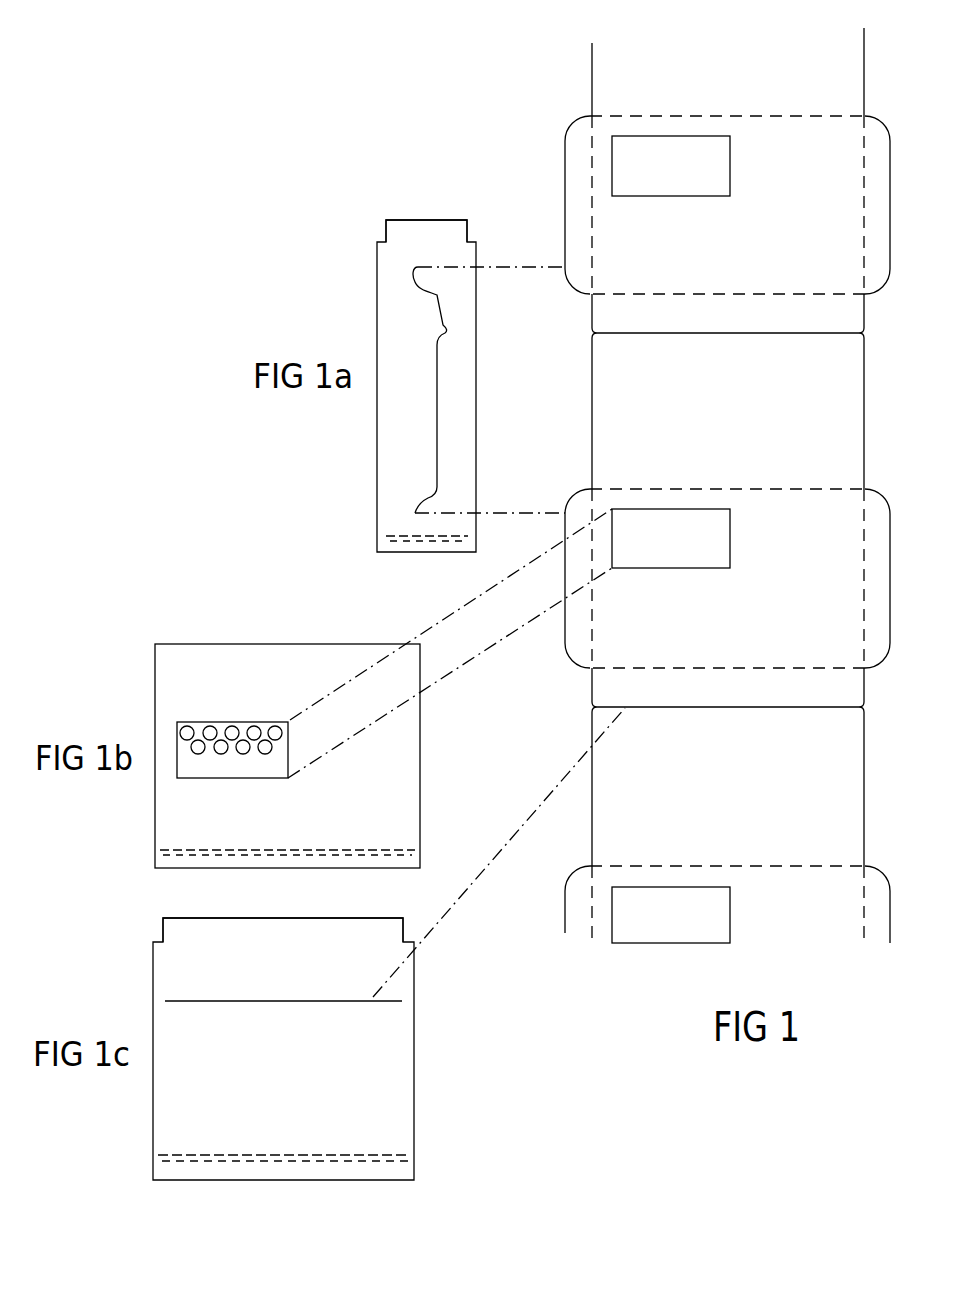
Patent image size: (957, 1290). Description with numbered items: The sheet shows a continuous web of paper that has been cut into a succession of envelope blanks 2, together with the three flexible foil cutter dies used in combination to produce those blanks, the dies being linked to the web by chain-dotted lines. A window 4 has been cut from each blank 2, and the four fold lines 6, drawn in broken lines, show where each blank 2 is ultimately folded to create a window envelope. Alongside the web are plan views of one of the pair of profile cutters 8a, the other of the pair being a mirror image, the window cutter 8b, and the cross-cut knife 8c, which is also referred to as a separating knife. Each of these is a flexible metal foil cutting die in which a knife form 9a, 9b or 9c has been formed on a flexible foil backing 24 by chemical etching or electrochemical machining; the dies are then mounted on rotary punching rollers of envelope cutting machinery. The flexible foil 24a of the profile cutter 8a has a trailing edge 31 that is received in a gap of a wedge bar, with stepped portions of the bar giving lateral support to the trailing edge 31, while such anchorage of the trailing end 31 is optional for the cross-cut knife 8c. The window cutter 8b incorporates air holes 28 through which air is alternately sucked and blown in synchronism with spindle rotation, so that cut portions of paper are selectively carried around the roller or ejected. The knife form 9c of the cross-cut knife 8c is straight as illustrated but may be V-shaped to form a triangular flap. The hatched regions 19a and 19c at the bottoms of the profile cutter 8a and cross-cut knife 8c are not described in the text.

In FIG. 1, the envelope blanks 2 is at (640, 64).
In FIG. 1, the window 4 is at (645, 160).
In FIG. 1, the fold lines 6 is at (745, 116).
In FIG. 1A, the profile cutter 8a is at (407, 373).
In FIG. 1B, the window cutter 8b is at (283, 709).
In FIG. 1C, the cross-cut knife 8c is at (290, 1057).
In FIG. 1A, the knife form 9a is at (438, 405).
In FIG. 1B, the knife form 9b is at (232, 780).
In FIG. 1C, the knife form 9c is at (268, 1002).
In FIG. 1A, the sealed bottom region 19a is at (425, 542).
In FIG. 1C, the sealed bottom region 19c is at (265, 1170).
In FIG. 1B, the flexible foil backing 24 is at (425, 802).
In FIG. 1C, the flexible foil backing 24 is at (388, 1127).
In FIG. 1A, the flexible foil 24a is at (390, 460).
In FIG. 1B, the air holes 28 is at (177, 722).
In FIG. 1A, the trailing edge 31 is at (439, 236).
In FIG. 1C, the trailing edge 31 is at (182, 930).